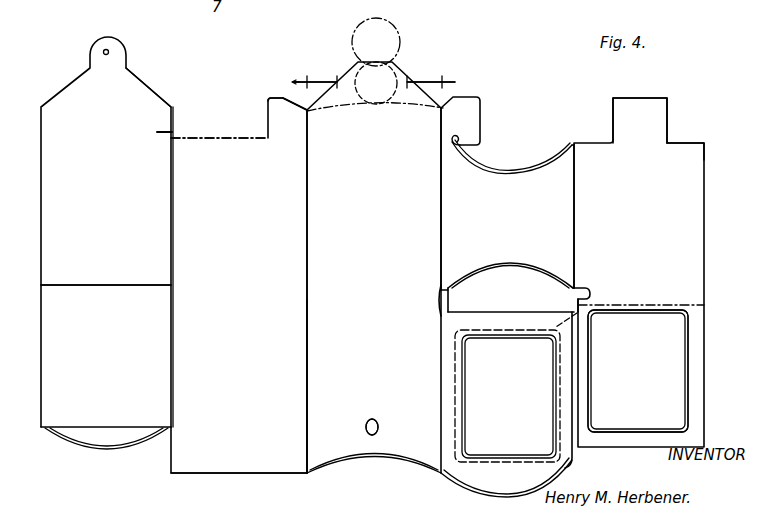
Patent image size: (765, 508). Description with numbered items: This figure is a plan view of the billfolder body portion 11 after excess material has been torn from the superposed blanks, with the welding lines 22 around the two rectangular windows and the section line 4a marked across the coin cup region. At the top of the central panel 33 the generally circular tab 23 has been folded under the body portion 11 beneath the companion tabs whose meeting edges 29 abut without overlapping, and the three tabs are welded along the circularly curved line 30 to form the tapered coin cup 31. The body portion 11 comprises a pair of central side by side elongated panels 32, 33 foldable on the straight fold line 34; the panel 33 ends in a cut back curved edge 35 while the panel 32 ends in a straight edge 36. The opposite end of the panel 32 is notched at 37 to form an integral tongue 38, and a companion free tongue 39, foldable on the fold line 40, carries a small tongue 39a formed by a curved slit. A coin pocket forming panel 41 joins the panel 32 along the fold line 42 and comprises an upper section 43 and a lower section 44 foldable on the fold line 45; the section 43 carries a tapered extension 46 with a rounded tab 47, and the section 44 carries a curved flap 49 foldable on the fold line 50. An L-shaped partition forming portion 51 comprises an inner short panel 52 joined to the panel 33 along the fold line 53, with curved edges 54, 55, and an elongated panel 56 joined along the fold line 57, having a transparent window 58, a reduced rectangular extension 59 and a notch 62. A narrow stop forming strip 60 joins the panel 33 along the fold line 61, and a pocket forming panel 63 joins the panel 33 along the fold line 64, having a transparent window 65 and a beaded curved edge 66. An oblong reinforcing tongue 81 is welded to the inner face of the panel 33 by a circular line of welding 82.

The billfolder body portion 11 is at (235, 152).
The welding lines 22 is at (462, 428).
The generally circular tab 23 is at (391, 46).
The free ends or edges of tabs 29 is at (375, 121).
The circularly curved line of welding 30 is at (431, 74).
The tapered coin cup 31 is at (314, 73).
The central elongated panel 32 is at (239, 285).
The central elongated panel 33 is at (374, 267).
The straight fold line 34 is at (307, 349).
The cut back curved edge 35 is at (402, 459).
The straight edge 36 is at (241, 476).
The notch 37 is at (212, 138).
The integral tongue 38 is at (278, 112).
The free tongue 39 is at (468, 122).
The small tongue 39a is at (461, 139).
The fold line 40 is at (441, 133).
The coin pocket forming panel 41 is at (60, 247).
The fold line 42 is at (174, 224).
The first or upper rectangular section 43 is at (106, 240).
The second rectangular section 44 is at (106, 388).
The fold line 45 is at (100, 285).
The tapered extension 46 is at (134, 92).
The rounded tab 47 is at (112, 47).
The curved flap 49 is at (97, 445).
The fold line 50 is at (115, 427).
The L-shaped partition forming portion 51 is at (688, 152).
The inner relatively short panel 52 is at (536, 216).
The fold line 53 is at (441, 212).
The curved edge 54 is at (521, 170).
The curved edge 55 is at (541, 266).
The elongated rectangular panel 56 is at (686, 268).
The fold line 57 is at (578, 222).
The rectangular transparent window 58 is at (663, 368).
The reduced rectangular extension 59 is at (655, 108).
The narrow strip 60 is at (447, 309).
The fold line 61 is at (444, 292).
The notch 62 is at (591, 293).
The pocket forming panel 63 is at (511, 302).
The fold line 64 is at (440, 387).
The rectangular transparent window 65 is at (516, 387).
The curved edge 66 is at (506, 493).
The reinforcing tongue 81 is at (357, 425).
The circular line of welding 82 is at (357, 434).
The section line 4a is at (370, 81).